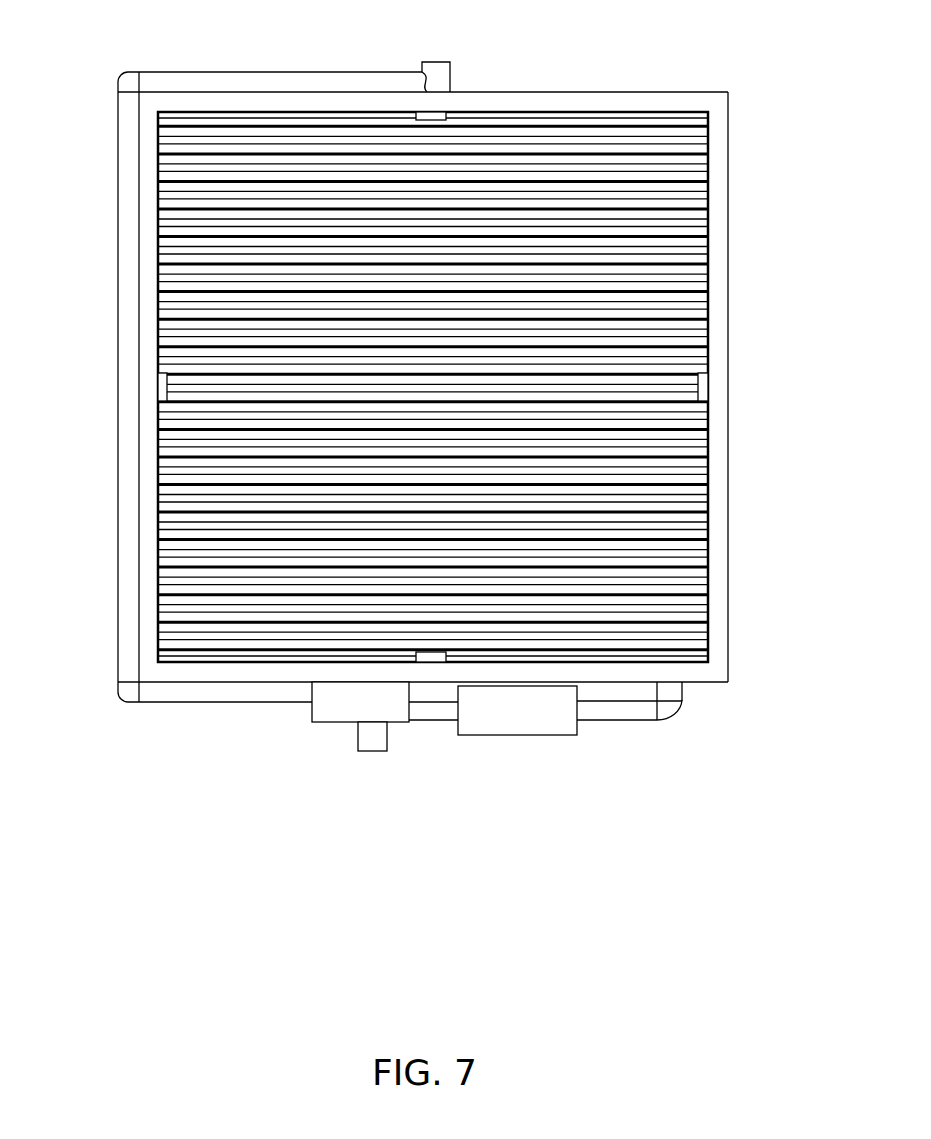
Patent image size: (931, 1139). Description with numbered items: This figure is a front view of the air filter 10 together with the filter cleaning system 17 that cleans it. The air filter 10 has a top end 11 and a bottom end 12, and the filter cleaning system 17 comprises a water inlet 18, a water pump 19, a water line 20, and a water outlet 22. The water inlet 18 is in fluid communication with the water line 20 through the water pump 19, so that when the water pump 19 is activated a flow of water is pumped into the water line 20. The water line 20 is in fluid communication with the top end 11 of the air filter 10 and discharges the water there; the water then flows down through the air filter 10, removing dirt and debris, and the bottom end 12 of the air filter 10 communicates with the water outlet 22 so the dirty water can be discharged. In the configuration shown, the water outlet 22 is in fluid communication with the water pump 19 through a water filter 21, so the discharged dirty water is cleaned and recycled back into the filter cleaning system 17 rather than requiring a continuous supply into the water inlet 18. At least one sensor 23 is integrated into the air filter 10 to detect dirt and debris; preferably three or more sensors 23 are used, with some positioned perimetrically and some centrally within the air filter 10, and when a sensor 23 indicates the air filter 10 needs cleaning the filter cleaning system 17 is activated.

The air filter 10 is at (720, 530).
The top end 11 is at (536, 70).
The bottom end 12 is at (729, 706).
The filter cleaning system 17 is at (497, 801).
The water inlet 18 is at (373, 743).
The water pump 19 is at (323, 715).
The water line 20 is at (126, 545).
The water filter 21 is at (535, 727).
The water outlet 22 is at (680, 693).
The sensor 23 is at (436, 113).